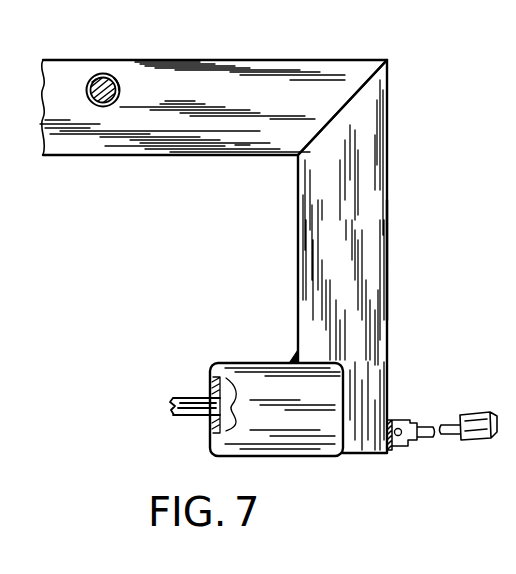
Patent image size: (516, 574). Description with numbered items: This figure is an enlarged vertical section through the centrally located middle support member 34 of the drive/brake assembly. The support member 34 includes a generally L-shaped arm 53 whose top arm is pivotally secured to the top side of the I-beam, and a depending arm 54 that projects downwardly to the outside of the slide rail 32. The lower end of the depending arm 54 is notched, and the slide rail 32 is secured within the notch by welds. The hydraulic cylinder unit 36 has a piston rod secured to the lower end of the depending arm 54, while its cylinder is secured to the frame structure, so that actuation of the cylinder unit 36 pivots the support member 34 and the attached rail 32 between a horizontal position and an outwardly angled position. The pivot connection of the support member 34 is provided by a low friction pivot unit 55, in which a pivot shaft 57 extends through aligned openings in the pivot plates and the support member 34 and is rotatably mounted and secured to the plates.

The slide rail 32 is at (260, 365).
The middle support member 34 is at (390, 61).
The hydraulic cylinder unit 36 is at (474, 412).
The L-shaped arm 53 is at (392, 180).
The depending arm 54 is at (368, 275).
The low friction pivot unit 55 is at (121, 77).
The pivot shaft 57 is at (102, 76).